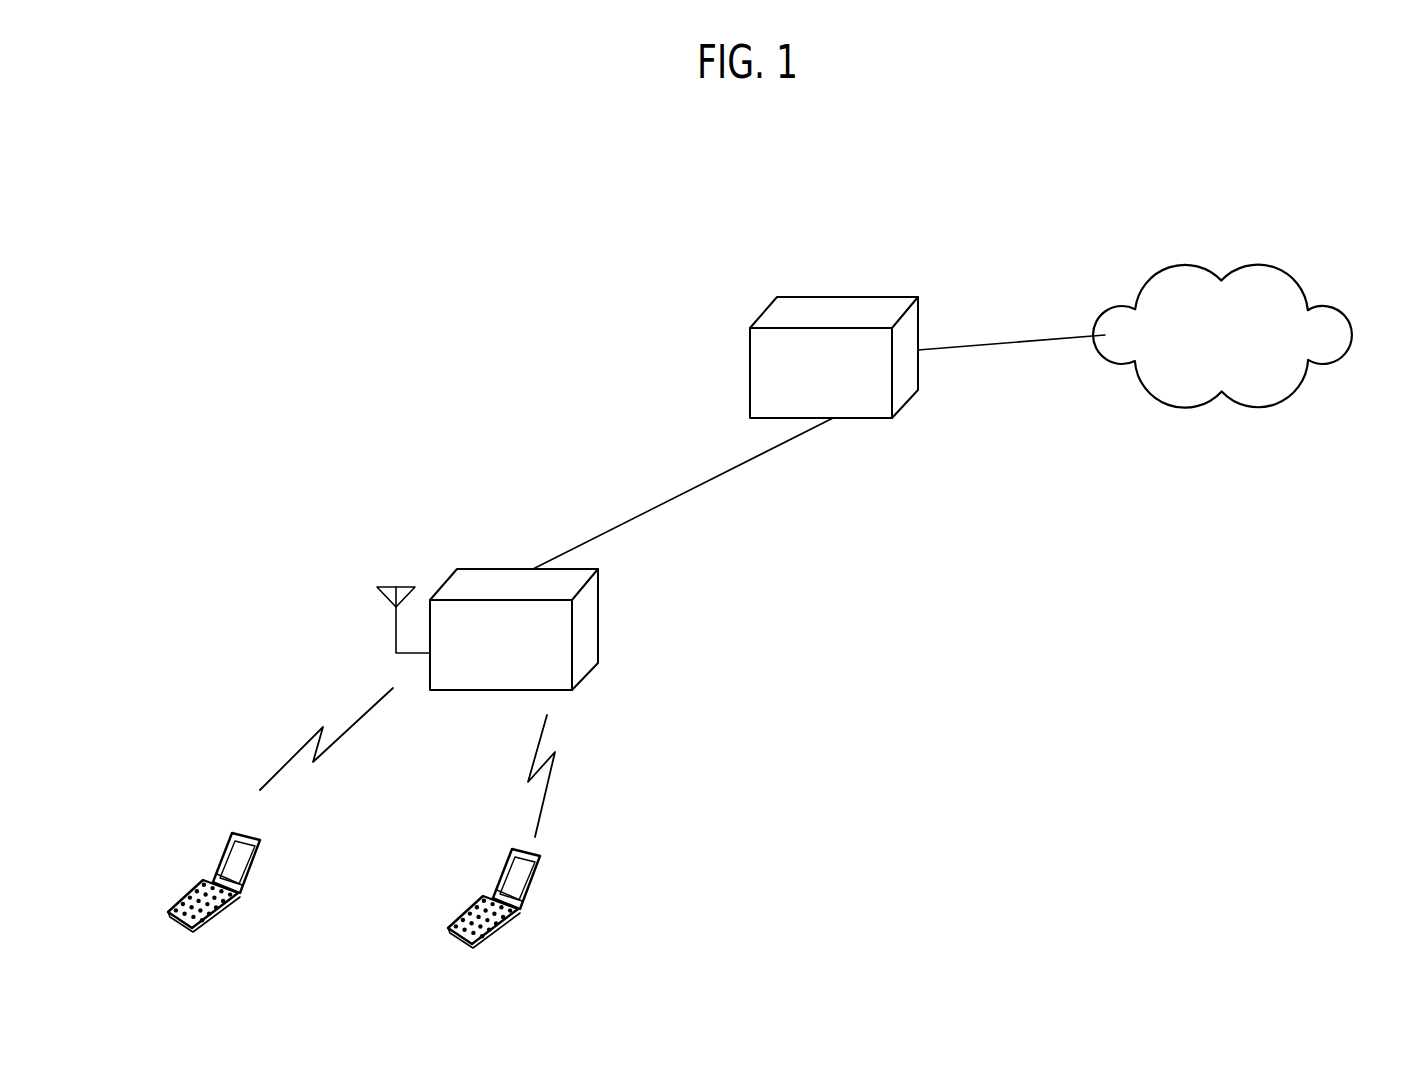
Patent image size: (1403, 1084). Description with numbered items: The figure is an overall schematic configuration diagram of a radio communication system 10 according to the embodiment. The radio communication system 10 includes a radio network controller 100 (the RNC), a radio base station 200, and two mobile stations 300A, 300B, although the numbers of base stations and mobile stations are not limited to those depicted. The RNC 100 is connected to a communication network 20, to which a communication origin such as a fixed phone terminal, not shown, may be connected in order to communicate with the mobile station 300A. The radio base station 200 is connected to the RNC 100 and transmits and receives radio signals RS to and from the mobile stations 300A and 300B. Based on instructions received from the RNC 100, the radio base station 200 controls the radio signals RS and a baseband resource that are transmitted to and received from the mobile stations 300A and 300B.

The radio communication system 10 is at (669, 268).
The communication network 20 is at (1242, 262).
The radio network controller 100 is at (822, 308).
The radio base station 200 is at (504, 578).
The radio signals RS is at (288, 757).
The mobile station 300A is at (260, 869).
The mobile station 300B is at (542, 881).